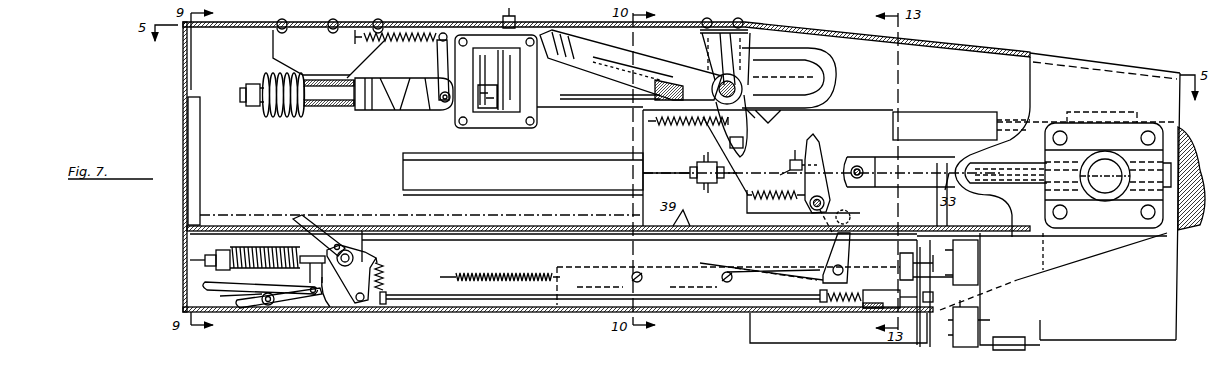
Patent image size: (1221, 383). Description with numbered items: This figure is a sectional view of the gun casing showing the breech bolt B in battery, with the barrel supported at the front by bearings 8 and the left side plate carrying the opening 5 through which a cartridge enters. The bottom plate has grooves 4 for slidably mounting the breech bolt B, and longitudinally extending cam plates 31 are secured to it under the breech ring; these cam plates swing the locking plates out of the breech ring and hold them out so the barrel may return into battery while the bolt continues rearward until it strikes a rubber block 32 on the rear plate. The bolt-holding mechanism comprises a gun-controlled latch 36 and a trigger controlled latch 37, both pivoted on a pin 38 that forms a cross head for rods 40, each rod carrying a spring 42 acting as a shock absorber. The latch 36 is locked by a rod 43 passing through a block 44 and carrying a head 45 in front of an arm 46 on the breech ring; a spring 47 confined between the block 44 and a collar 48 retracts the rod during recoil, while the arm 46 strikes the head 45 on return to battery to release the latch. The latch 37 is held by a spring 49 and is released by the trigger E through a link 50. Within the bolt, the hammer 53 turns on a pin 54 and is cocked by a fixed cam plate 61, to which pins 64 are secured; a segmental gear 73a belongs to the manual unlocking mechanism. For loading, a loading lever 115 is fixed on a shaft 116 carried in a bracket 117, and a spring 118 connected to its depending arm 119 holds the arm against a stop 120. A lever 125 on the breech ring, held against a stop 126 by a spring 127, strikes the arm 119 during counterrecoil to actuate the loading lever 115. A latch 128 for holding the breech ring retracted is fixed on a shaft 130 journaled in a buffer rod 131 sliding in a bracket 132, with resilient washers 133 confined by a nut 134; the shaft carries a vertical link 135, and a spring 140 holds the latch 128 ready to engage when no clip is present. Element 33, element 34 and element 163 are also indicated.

The grooves 4 is at (475, 232).
The opening 5 is at (832, 102).
The bearings 8 is at (1101, 171).
The cam plates 31 is at (497, 216).
The rubber block 32 is at (200, 203).
The valve 33 is at (713, 185).
The rod end 34 is at (1018, 168).
The gun-controlled latch 36 is at (296, 264).
The trigger controlled latch 37 is at (305, 224).
The pin 38 is at (348, 248).
The rods 40 is at (188, 259).
The spring 42 is at (258, 250).
The rod 43 is at (490, 300).
The block 44 is at (900, 268).
The head 45 is at (928, 302).
The arm 46 is at (921, 312).
The spring 47 is at (834, 303).
The collar 48 is at (820, 302).
The spring 49 is at (381, 272).
The link 50 is at (325, 300).
The hammer 53 is at (843, 256).
The pin 54 is at (849, 212).
The fixed cam plate 61 is at (508, 268).
The pins 64 is at (718, 272).
The mating segmental gear 73a is at (855, 308).
The loading lever 115 is at (597, 61).
The shaft 116 is at (742, 84).
The bracket 117 is at (740, 48).
The spring 118 is at (672, 125).
The depending arm 119 is at (750, 99).
The stop 120 is at (730, 143).
The lever 125 is at (816, 148).
The stop 126 is at (790, 158).
The spring 127 is at (785, 199).
The latch 128 is at (397, 110).
The shaft 130 is at (445, 103).
The buffer rod 131 is at (333, 106).
The bracket 132 is at (311, 52).
The resilient washers 133 is at (290, 117).
The nut 134 is at (253, 108).
The link 135 is at (440, 52).
The spring 140 is at (400, 39).
The pivot 163 is at (631, 262).
The trigger E is at (205, 285).
The breech bolt B is at (934, 111).